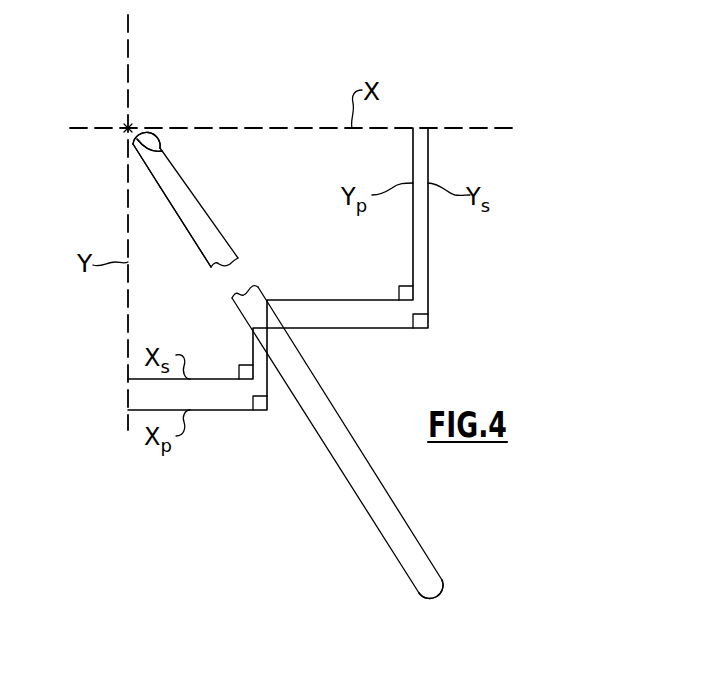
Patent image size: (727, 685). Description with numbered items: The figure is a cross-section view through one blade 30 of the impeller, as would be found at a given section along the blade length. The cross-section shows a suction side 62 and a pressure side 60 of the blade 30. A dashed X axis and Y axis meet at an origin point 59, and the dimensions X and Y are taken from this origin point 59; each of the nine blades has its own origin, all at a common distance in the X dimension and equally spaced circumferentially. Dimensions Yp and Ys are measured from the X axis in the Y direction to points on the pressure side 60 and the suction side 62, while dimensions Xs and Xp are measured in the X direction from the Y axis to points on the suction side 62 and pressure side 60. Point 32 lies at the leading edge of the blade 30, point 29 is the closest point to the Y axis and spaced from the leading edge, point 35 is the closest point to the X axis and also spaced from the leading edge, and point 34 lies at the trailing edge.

The closest point to the Y axis 29 is at (133, 146).
The blade 30 is at (421, 564).
The leading edge point 32 is at (162, 150).
The trailing edge point 34 is at (441, 594).
The closest point to the X axis 35 is at (147, 133).
The origin point 59 is at (128, 128).
The pressure side 60 is at (218, 229).
The suction side 62 is at (189, 233).